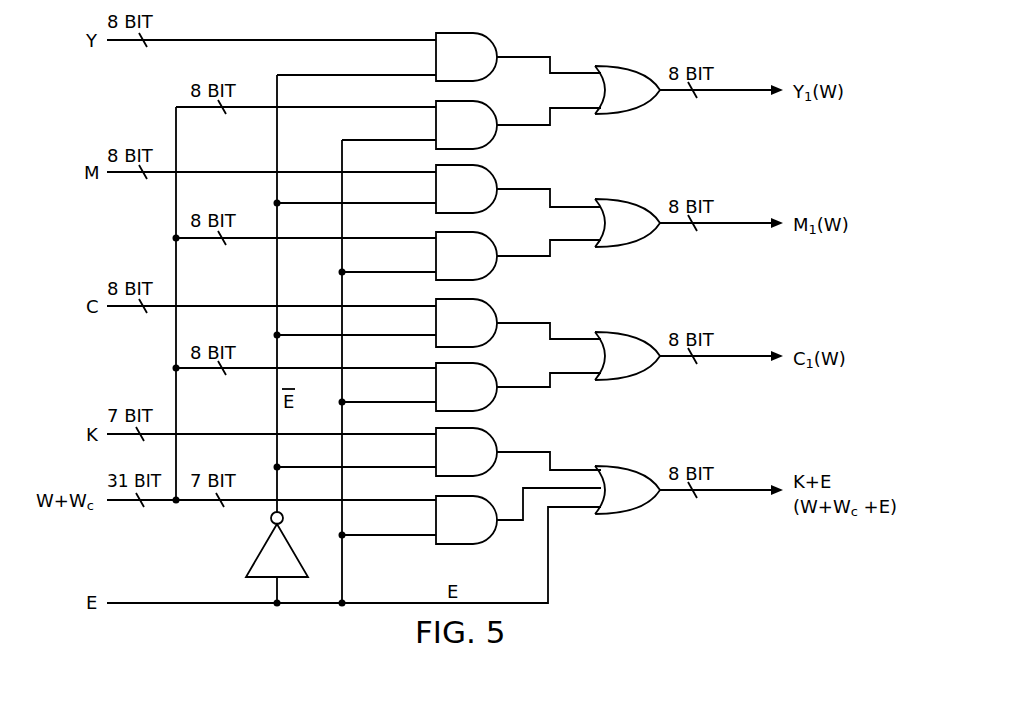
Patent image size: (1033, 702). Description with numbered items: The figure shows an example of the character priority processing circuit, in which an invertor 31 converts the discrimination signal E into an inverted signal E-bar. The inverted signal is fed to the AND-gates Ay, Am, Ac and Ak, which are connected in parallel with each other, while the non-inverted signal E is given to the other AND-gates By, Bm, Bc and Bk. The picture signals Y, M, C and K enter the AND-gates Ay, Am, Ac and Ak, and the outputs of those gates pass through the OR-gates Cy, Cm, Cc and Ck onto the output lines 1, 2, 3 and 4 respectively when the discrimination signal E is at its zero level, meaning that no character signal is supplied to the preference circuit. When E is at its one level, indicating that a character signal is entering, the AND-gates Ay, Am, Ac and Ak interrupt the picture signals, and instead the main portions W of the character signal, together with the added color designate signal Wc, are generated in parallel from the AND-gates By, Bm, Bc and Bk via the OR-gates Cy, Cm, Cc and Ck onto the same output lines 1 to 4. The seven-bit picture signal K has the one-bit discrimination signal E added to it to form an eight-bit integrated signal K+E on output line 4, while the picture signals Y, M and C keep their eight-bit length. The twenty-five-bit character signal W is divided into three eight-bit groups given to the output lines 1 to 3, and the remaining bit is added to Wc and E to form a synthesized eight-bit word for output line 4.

The invertor 31 is at (266, 553).
The output line l1 1 is at (721, 82).
The output line l2 2 is at (721, 215).
The output line l3 3 is at (721, 348).
The output line l4 4 is at (721, 482).
The AND-gate Ay is at (466, 57).
The AND-gate By is at (466, 125).
The AND-gate Am is at (466, 189).
The AND-gate Bm is at (466, 256).
The AND-gate Ac is at (466, 323).
The AND-gate Bc is at (466, 387).
The AND-gate Ak is at (466, 452).
The AND-gate Bk is at (466, 520).
The OR-gate Cy is at (627, 90).
The OR-gate Cm is at (627, 223).
The OR-gate Cc is at (627, 356).
The OR-gate Ck is at (627, 490).